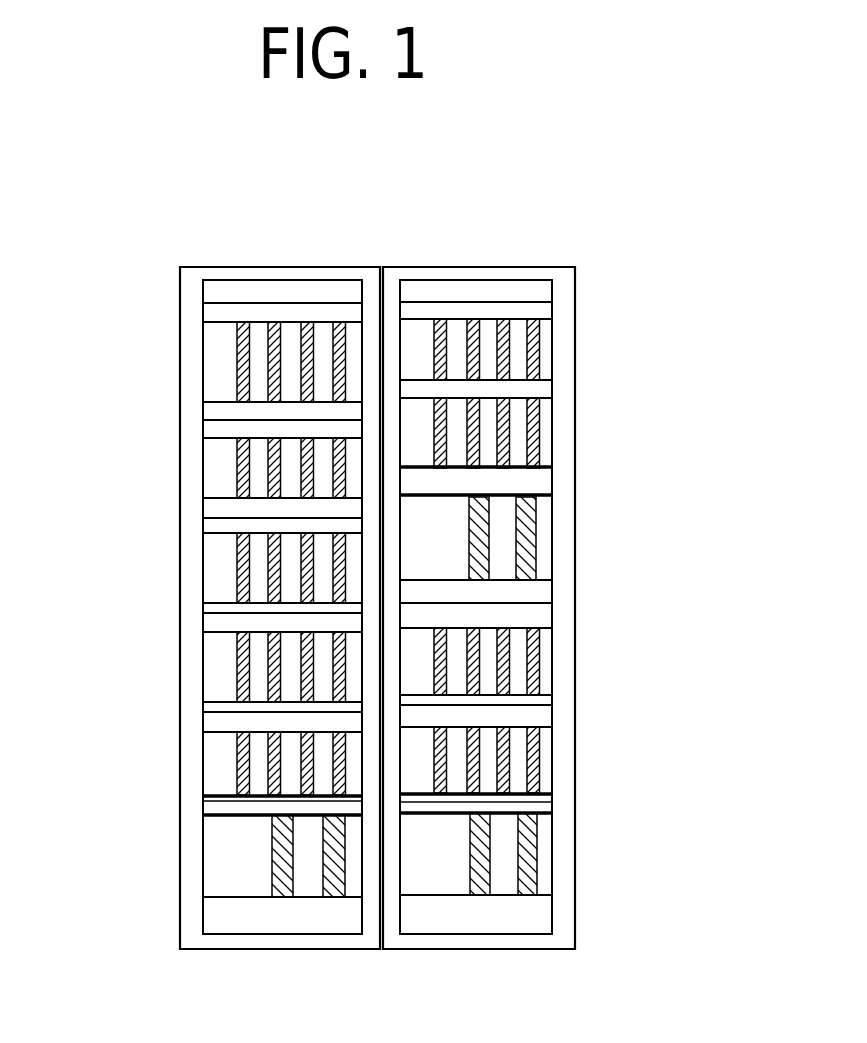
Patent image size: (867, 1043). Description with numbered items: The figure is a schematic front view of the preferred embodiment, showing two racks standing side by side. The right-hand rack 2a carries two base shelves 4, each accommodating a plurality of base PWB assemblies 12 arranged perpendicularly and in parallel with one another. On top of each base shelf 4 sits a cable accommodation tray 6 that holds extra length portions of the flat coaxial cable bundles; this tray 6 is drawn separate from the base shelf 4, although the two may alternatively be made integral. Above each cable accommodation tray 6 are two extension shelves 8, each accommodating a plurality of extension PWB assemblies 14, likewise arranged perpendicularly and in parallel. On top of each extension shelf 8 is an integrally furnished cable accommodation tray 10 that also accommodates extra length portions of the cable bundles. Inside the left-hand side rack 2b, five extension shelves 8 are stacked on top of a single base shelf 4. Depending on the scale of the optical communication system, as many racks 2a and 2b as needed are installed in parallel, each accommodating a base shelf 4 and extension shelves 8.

The rack 2a is at (505, 267).
The left-hand side rack 2b is at (222, 268).
The base shelf 4 is at (227, 860).
The cable accommodation tray 6 is at (207, 814).
The extension shelf 8 is at (217, 370).
The cable accommodation tray 10 is at (298, 310).
The base PWB assembly 12 is at (283, 897).
The extension PWB assembly 14 is at (237, 343).